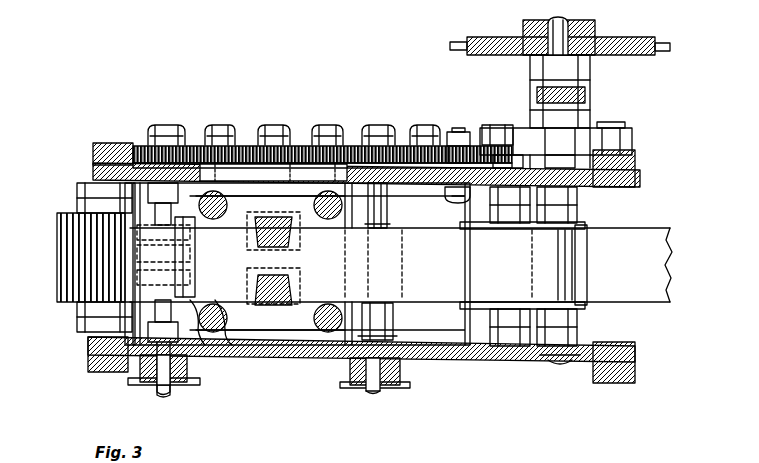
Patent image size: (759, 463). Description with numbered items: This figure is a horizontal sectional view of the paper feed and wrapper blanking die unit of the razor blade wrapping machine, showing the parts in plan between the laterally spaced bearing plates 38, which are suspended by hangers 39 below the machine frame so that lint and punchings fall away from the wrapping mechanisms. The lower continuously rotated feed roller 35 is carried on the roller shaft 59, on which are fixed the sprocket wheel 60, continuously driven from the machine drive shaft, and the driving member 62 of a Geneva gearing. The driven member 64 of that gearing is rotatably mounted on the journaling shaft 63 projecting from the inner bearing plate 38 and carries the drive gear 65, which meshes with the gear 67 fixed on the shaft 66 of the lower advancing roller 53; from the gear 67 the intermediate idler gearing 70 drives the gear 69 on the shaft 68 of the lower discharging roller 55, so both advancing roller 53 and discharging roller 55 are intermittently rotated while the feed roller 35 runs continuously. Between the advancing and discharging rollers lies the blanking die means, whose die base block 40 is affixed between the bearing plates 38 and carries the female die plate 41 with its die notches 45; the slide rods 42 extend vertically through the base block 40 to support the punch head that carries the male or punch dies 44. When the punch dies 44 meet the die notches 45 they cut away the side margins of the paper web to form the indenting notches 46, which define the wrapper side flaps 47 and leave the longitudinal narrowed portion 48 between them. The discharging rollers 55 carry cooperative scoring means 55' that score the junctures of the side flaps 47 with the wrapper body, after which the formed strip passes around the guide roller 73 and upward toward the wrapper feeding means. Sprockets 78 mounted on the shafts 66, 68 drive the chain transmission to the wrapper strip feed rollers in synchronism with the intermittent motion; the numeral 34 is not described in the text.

The bearing block 34 is at (474, 306).
The feed roller 35 is at (590, 233).
The bearing plates 38 is at (93, 172).
The hangers 39 is at (97, 147).
The die base block 40 is at (292, 330).
The female die plate 41 is at (226, 350).
The slide rods 42 is at (248, 204).
The male or punch dies 44 is at (290, 240).
The die notches 45 is at (268, 216).
The indenting notches 46 is at (248, 240).
The wrapper side flaps 47 is at (125, 150).
The longitudinal narrowed portion 48 is at (280, 267).
The paper web or strip advancing roller 53 is at (394, 308).
The paper web or strip discharging roller 55 is at (139, 294).
The scoring means 55' is at (84, 271).
The roller shaft 59 is at (565, 35).
The sprocket wheel 60 is at (628, 45).
The driving member of Geneva gearing 62 is at (522, 135).
The journaling shaft 63 is at (452, 188).
The driven member of Geneva gearing 64 is at (476, 142).
The drive gear 65 is at (420, 147).
The shaft of lower advancing roller 66 is at (388, 204).
The gear 67 is at (356, 147).
The shaft of lower discharging roller 68 is at (196, 350).
The gear 69 is at (143, 145).
The intermediate idler gearing 70 is at (300, 147).
The guide roller 73 is at (60, 240).
The sprockets 78 is at (186, 390).